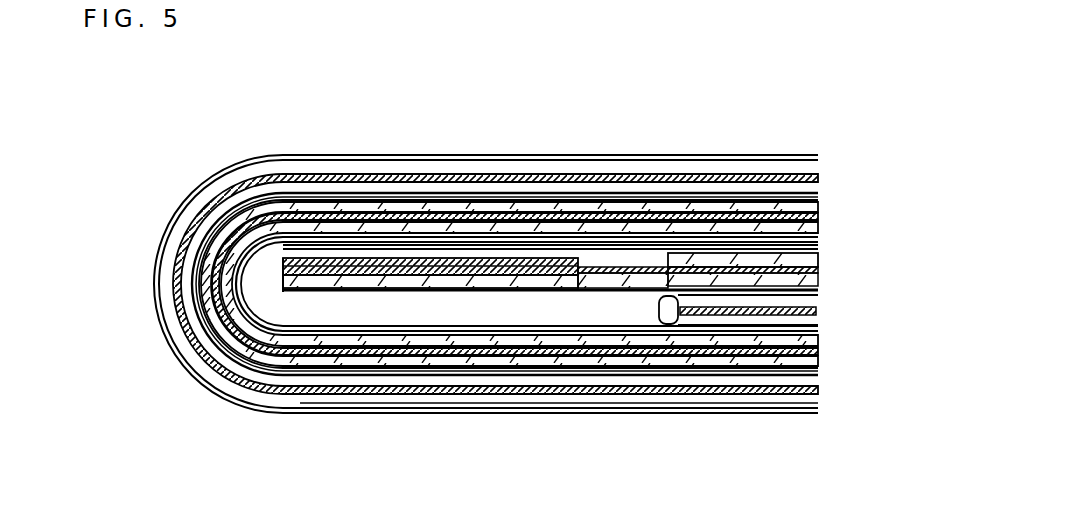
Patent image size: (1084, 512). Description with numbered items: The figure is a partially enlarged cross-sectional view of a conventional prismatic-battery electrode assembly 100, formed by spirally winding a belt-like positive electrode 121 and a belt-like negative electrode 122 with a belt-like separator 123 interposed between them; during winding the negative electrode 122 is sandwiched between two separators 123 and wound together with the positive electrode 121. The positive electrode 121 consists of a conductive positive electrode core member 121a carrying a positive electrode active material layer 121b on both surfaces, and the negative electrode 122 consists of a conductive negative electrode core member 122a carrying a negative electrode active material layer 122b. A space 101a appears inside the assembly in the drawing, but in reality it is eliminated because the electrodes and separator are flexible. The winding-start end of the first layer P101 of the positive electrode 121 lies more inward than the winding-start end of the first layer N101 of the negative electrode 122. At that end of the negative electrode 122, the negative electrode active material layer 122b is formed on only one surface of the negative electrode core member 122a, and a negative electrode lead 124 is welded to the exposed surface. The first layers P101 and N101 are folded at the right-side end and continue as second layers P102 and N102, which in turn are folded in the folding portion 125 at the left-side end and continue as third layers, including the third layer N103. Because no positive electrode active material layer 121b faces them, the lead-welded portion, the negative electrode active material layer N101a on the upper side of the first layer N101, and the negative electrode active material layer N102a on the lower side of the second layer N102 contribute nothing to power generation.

The electrode assembly 100 is at (692, 98).
The space 101a is at (427, 312).
The positive electrode 121 is at (659, 312).
The positive electrode core member 121a is at (767, 396).
The positive electrode active material layer 121b is at (700, 403).
The negative electrode 122 is at (452, 340).
The negative electrode core member 122a is at (362, 353).
The negative electrode active material layer 122b is at (535, 358).
The separator 123 is at (297, 413).
The negative electrode lead 124 is at (534, 255).
The folding portion 125 is at (190, 180).
The first layer of the positive electrode P101 is at (825, 295).
The second layer of the positive electrode P102 is at (825, 165).
The first layer of the negative electrode N101 is at (825, 257).
The negative electrode active material layer on the upper side of the first layer N101a is at (717, 260).
The second layer of the negative electrode N102 is at (825, 205).
The negative electrode active material layer on the lower side of the second layer N102a is at (622, 233).
The third layer of the negative electrode N103 is at (828, 338).